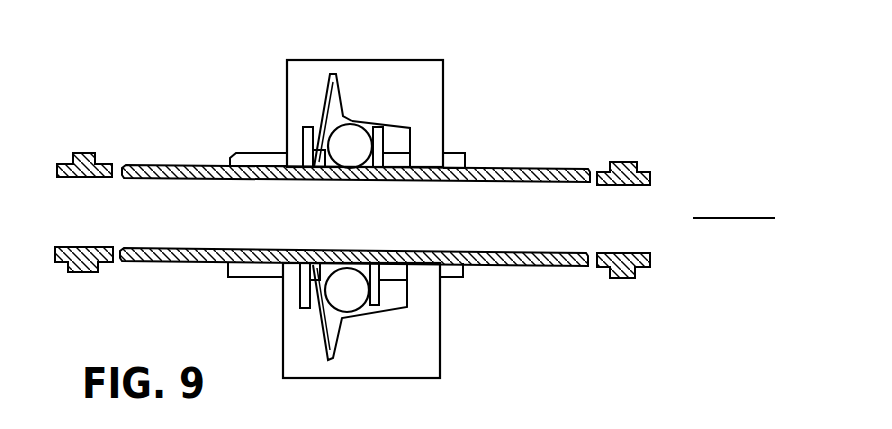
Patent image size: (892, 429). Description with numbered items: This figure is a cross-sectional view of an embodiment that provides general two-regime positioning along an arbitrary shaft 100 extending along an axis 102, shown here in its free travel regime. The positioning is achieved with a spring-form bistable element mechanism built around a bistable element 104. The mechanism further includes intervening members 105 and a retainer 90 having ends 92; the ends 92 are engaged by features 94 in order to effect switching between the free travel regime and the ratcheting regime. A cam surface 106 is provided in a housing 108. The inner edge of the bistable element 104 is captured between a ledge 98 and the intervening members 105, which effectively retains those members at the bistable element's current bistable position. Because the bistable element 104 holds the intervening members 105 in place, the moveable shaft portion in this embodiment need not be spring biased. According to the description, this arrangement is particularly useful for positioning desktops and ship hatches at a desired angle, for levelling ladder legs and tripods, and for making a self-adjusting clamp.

The retainer 90 is at (227, 170).
The ends 92 is at (228, 156).
The features 94 is at (88, 274).
The ledge 98 is at (330, 163).
The shaft 100 is at (508, 252).
The axis 102 is at (728, 217).
The bistable element 104 is at (323, 107).
The intervening members 105 is at (350, 147).
The cam surface 106 is at (349, 120).
The housing 108 is at (417, 72).